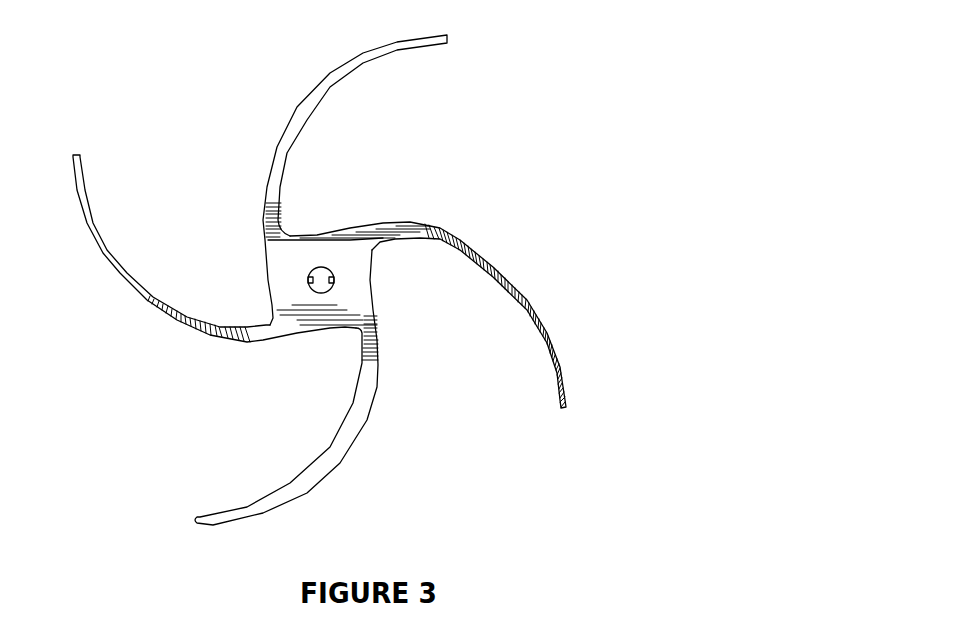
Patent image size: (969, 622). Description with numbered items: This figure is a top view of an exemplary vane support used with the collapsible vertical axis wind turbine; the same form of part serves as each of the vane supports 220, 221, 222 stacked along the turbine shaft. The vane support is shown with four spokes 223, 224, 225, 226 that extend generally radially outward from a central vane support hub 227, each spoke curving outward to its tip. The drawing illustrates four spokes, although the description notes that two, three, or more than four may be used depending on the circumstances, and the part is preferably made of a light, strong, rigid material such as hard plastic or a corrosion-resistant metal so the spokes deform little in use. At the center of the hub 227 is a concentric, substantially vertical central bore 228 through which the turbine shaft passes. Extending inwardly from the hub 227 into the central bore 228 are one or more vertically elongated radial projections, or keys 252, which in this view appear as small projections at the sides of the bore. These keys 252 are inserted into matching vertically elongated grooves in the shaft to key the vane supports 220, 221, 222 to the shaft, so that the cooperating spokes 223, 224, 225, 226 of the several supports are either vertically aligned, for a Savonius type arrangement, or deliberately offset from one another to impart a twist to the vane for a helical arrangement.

The vane support 220 is at (418, 280).
The vane support 221 is at (418, 280).
The vane support 222 is at (418, 280).
The spoke 223 is at (473, 254).
The spoke 224 is at (367, 401).
The spoke 225 is at (108, 262).
The spoke 226 is at (370, 57).
The vane support hub 227 is at (342, 262).
The central vertical bore 228 is at (319, 288).
The elongated projections (keys) 252 is at (308, 281).